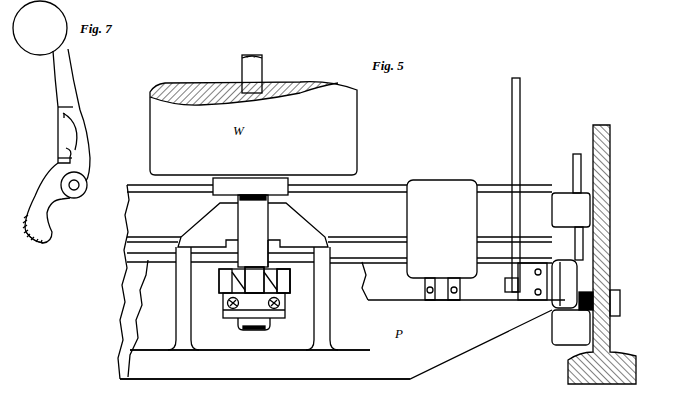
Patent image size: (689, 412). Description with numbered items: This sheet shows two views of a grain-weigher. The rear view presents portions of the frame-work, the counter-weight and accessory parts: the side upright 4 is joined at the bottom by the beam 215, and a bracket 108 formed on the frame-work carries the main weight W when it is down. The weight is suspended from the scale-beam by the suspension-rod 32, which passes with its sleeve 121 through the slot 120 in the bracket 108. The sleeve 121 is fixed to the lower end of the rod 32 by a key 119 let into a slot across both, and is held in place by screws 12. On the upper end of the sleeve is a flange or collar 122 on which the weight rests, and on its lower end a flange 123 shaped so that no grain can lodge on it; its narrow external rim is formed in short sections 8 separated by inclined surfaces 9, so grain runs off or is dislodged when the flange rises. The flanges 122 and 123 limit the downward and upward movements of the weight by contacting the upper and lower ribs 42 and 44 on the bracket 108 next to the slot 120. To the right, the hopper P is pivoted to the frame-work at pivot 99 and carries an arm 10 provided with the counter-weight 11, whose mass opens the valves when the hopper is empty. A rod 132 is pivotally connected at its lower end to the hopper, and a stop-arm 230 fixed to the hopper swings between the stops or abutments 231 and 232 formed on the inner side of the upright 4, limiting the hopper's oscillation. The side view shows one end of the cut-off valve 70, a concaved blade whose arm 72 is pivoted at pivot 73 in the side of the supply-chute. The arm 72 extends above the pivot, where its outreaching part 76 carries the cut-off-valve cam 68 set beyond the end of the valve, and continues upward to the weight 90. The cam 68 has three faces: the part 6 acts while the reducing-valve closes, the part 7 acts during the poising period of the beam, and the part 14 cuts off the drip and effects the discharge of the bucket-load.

In FIG. 7, the weight 90 is at (40, 28).
In FIG. 7, the cut-off valve arm 72 is at (65, 71).
In FIG. 7, the outreaching part of the arm 76 is at (78, 126).
In FIG. 7, the cut-off-valve cam 68 is at (86, 131).
In FIG. 7, the cam-face part 6 is at (58, 125).
In FIG. 7, the cam-face part 7 is at (60, 158).
In FIG. 7, the cam-face part 14 is at (68, 165).
In FIG. 7, the pivot 73 is at (76, 186).
In FIG. 7, the cut-off valve 70 is at (33, 237).
In FIG. 5, the suspension-rod 32 is at (256, 70).
In FIG. 5, the flange or collar 122 is at (222, 186).
In FIG. 5, the upper rib 42 is at (222, 205).
In FIG. 5, the sleeve 121 is at (248, 238).
In FIG. 5, the slot or opening 120 is at (243, 245).
In FIG. 5, the lower rib 44 is at (230, 243).
In FIG. 5, the bracket 108 is at (188, 308).
In FIG. 5, the beam 215 is at (305, 362).
In FIG. 5, the flange 123 is at (227, 284).
In FIG. 5, the rim-sections 8 is at (273, 281).
In FIG. 5, the inclined surfaces 9 is at (267, 287).
In FIG. 5, the screws 12 is at (228, 300).
In FIG. 5, the key 119 is at (257, 303).
In FIG. 5, the counter-weight 11 is at (442, 240).
In FIG. 5, the arm 10 is at (440, 290).
In FIG. 5, the rod 132 is at (513, 100).
In FIG. 5, the upright 4 is at (610, 138).
In FIG. 5, the stop or abutment 231 is at (571, 210).
In FIG. 5, the stop-arm 230 is at (562, 286).
In FIG. 5, the pivot 99 is at (617, 296).
In FIG. 5, the stop or abutment 232 is at (571, 327).